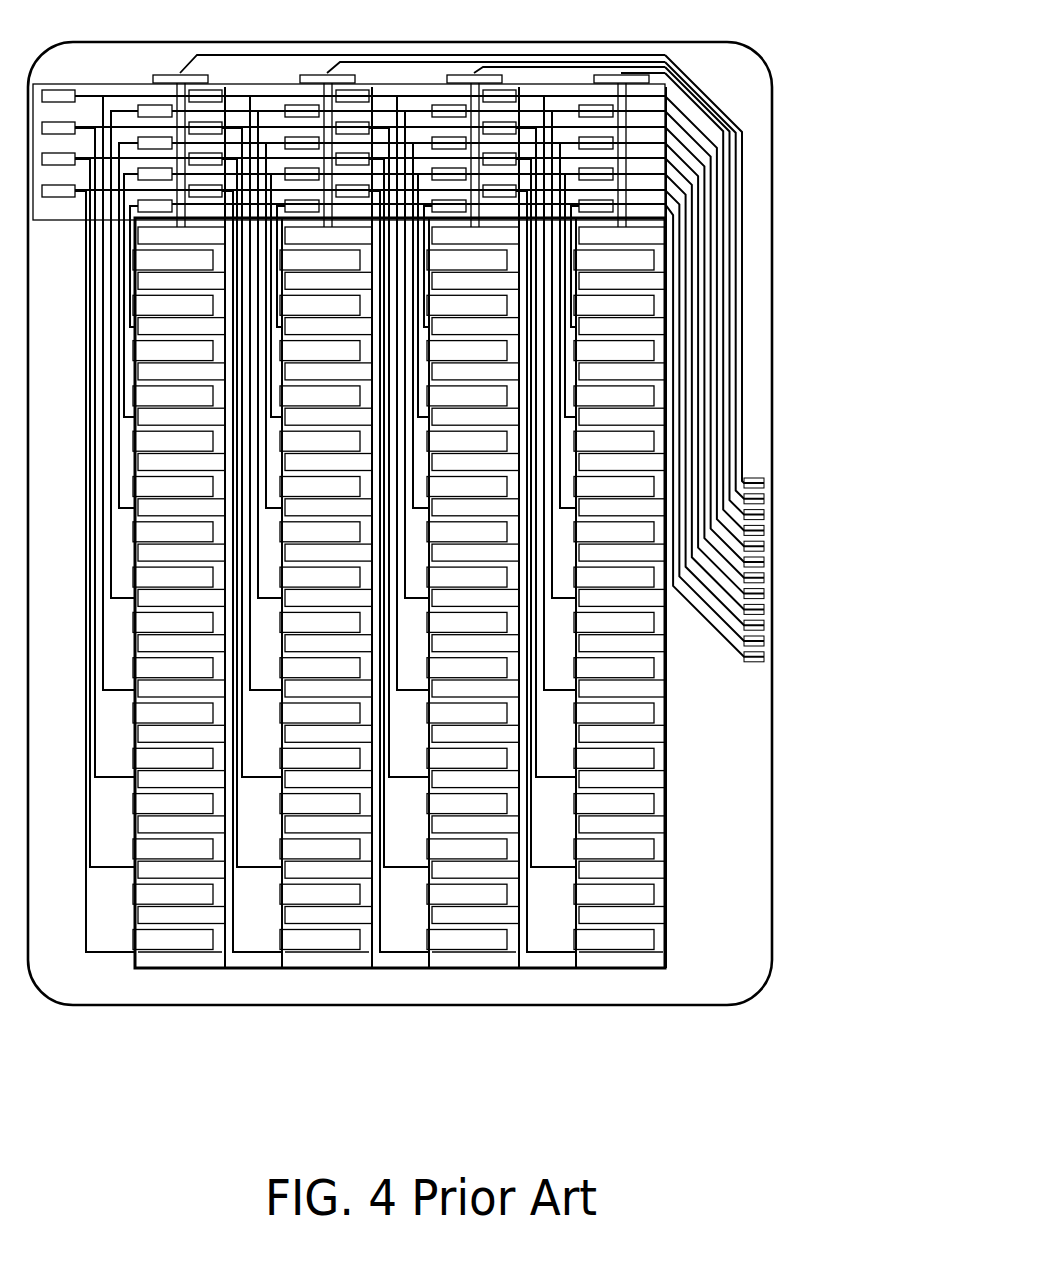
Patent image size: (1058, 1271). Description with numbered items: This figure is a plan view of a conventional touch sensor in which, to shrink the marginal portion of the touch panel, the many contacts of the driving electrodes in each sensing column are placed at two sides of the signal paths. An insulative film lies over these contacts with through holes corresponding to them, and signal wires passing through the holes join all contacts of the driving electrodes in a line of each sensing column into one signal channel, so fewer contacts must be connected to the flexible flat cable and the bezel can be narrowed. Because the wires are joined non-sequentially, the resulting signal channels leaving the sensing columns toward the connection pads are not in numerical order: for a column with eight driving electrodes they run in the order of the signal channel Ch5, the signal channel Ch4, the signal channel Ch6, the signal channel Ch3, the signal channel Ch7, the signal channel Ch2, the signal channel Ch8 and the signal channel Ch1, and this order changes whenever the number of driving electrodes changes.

The signal channel Ch1 is at (653, 204).
The signal channel Ch2 is at (650, 174).
The signal channel Ch3 is at (648, 143).
The signal channel Ch4 is at (648, 111).
The signal channel Ch5 is at (650, 96).
The signal channel Ch6 is at (650, 127).
The signal channel Ch7 is at (648, 158).
The signal channel Ch8 is at (650, 190).